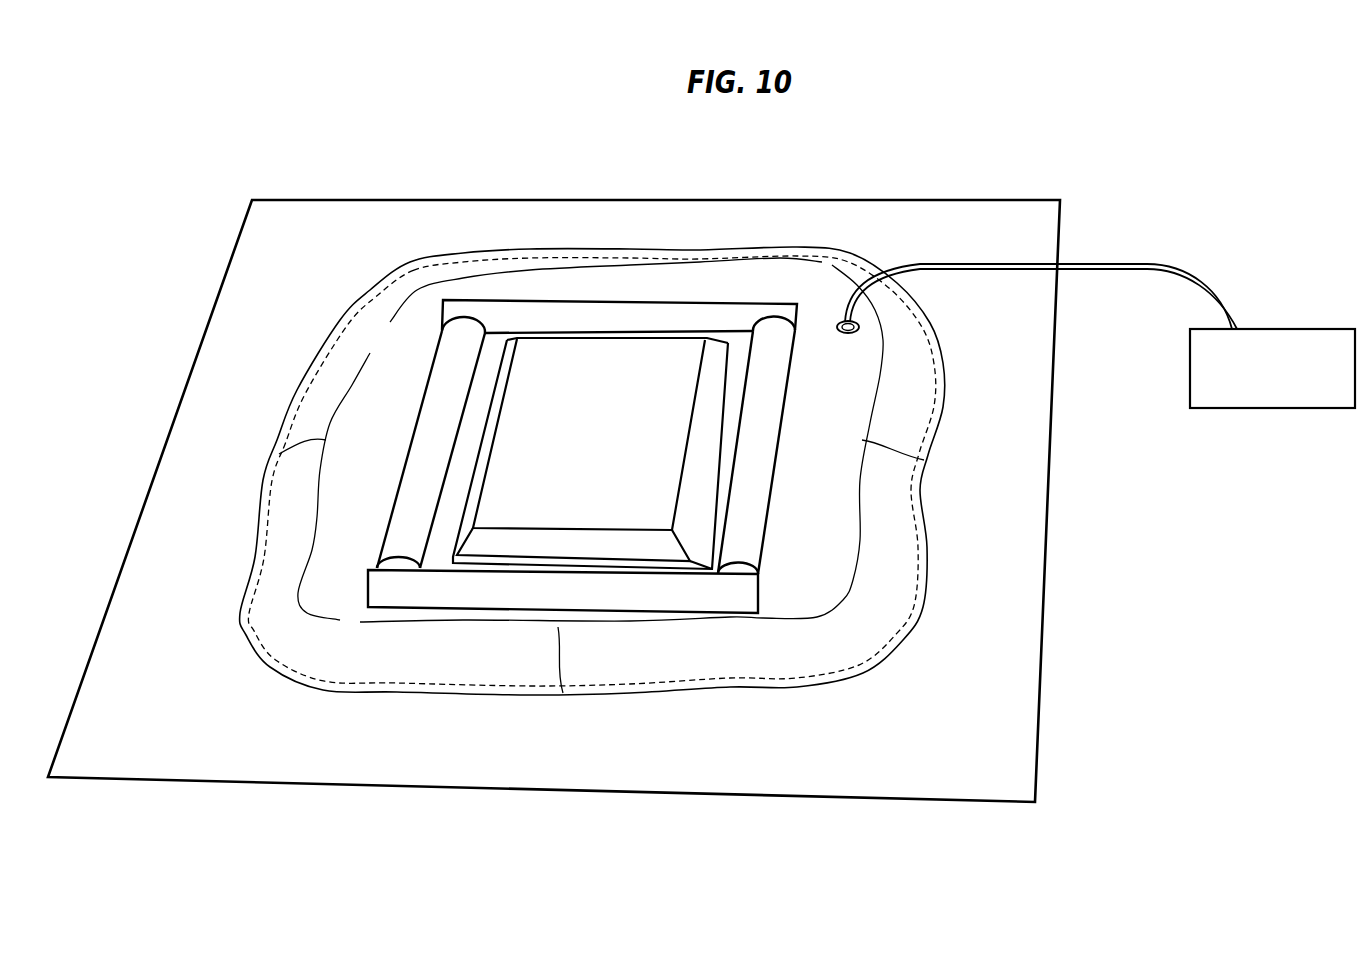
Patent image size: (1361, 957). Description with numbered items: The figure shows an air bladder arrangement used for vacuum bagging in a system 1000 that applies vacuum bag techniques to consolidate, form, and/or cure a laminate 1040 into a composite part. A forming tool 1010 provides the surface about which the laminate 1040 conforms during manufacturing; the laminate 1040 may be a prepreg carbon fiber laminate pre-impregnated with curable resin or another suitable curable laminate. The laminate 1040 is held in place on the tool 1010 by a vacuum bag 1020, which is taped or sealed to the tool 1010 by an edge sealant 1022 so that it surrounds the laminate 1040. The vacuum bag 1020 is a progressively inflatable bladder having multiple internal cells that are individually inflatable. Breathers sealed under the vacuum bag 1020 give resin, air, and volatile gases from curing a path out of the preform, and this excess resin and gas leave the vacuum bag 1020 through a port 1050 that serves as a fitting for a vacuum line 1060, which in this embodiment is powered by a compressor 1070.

The system 1000 is at (1176, 633).
The forming tool 1010 is at (671, 796).
The vacuum bag 1020 is at (792, 694).
The edge sealant 1022 is at (383, 297).
The laminate 1040 is at (600, 404).
The port 1050 is at (850, 338).
The vacuum line 1060 is at (1142, 256).
The compressor 1070 is at (1332, 328).